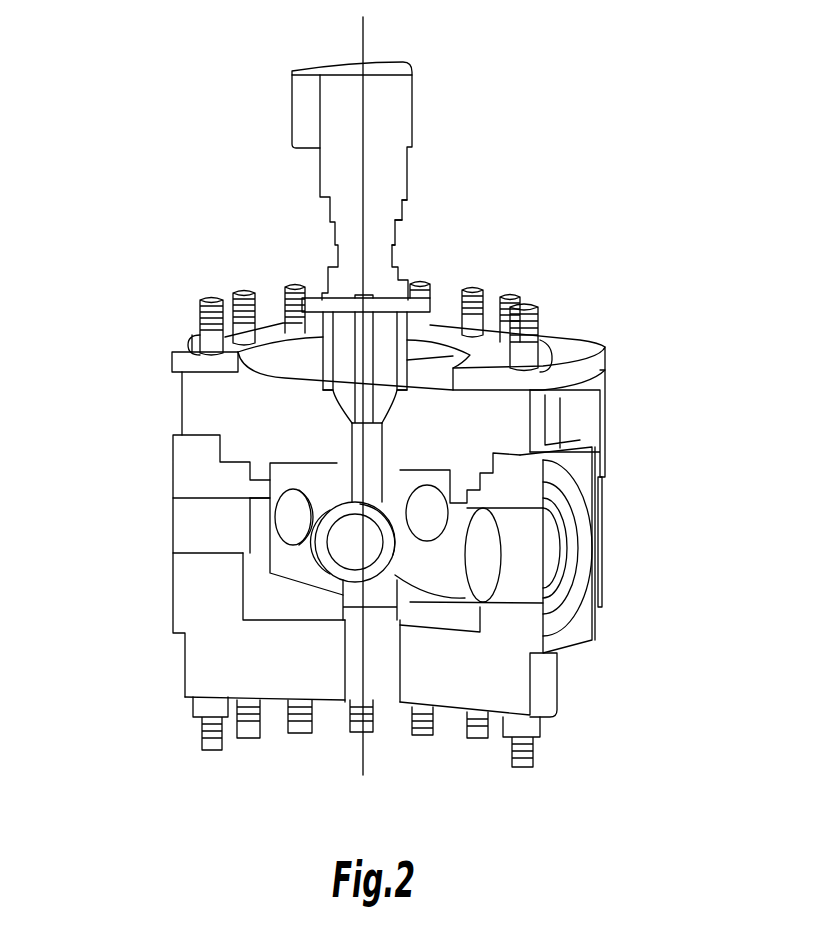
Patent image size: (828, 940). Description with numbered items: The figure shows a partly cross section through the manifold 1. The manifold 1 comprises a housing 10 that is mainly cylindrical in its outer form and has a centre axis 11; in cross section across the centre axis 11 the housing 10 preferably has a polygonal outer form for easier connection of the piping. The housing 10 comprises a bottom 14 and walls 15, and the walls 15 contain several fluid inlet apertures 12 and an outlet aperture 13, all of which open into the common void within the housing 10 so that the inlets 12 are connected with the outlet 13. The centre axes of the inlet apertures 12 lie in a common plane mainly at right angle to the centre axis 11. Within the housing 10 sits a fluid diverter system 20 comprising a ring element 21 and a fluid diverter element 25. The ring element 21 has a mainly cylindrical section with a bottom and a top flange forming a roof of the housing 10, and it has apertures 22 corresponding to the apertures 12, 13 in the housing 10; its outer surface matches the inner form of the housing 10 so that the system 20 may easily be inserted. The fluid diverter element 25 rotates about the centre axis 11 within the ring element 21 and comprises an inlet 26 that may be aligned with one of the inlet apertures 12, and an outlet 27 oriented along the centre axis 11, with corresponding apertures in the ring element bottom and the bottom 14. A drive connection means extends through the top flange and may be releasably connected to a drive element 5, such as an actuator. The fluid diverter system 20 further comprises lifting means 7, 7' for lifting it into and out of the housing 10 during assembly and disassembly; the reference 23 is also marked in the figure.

The manifold 1 is at (128, 372).
The drive element 5 is at (392, 115).
The lifting means 7 is at (574, 331).
The seal ring 7' is at (166, 315).
The housing 10 is at (172, 592).
The centre axis 11 is at (364, 42).
The fluid inlet apertures 12 is at (190, 527).
The outlet aperture 13 is at (545, 547).
The bottom 14 is at (273, 672).
The walls 15 is at (190, 462).
The fluid diverter system 20 is at (503, 418).
The ring element 21 is at (252, 585).
The apertures 22 is at (291, 512).
The flow passage 23 is at (458, 543).
The fluid diverter element 25 is at (406, 632).
The inlet 26 is at (341, 535).
The outlet 27 is at (362, 614).